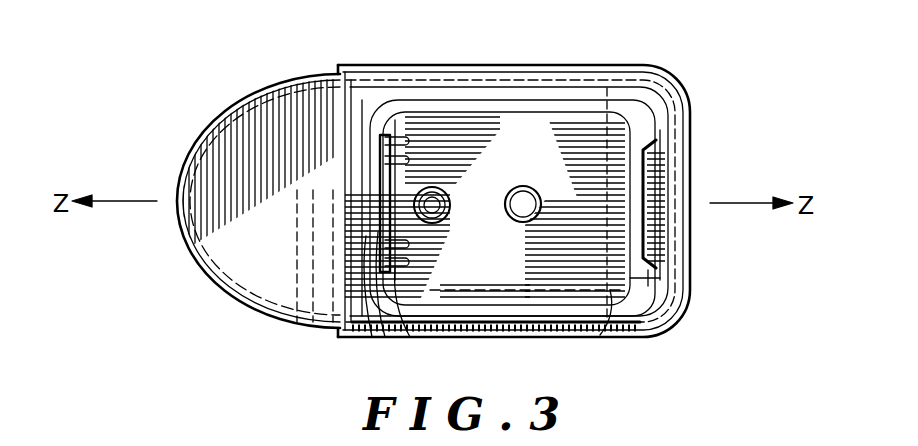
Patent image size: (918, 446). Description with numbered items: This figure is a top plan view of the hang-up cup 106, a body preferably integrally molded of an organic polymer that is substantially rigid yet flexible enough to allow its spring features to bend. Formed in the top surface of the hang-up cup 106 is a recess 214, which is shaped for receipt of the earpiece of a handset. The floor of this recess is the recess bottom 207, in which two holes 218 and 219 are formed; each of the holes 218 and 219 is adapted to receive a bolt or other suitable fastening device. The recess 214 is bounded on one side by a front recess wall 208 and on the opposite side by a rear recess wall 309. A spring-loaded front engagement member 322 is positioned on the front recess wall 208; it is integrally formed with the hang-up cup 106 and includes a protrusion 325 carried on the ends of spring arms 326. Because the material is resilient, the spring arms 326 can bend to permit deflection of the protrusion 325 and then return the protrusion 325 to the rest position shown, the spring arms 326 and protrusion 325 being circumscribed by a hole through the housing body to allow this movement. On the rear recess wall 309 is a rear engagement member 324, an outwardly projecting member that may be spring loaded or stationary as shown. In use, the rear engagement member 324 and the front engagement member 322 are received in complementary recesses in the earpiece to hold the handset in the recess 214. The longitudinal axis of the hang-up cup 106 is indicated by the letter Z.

The hang-up cup 106 is at (678, 75).
The recess bottom 207 is at (446, 271).
The front recess wall 208 is at (376, 300).
The recess 214 is at (638, 300).
The hole 218 is at (431, 196).
The hole 219 is at (525, 197).
The rear recess wall 309 is at (657, 278).
The front engagement member 322 is at (364, 181).
The rear engagement member 324 is at (658, 167).
The protrusion 325 is at (370, 233).
The spring arms 326 is at (384, 147).